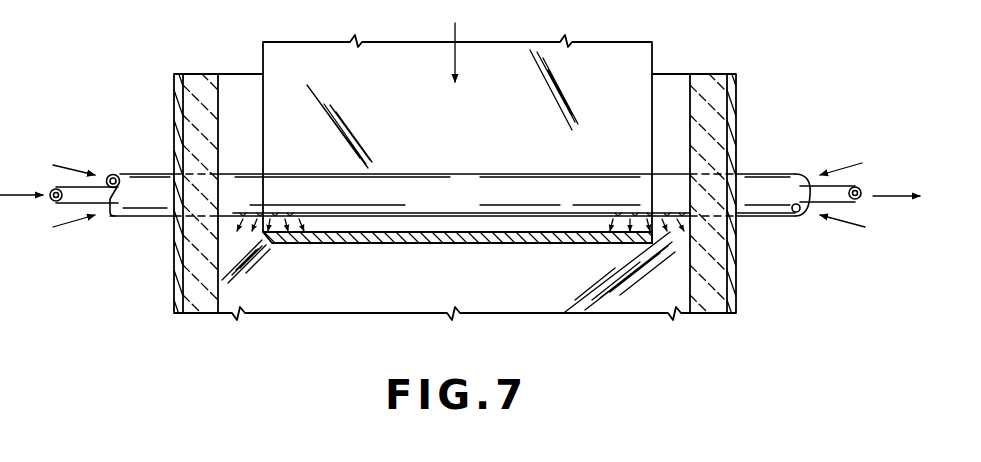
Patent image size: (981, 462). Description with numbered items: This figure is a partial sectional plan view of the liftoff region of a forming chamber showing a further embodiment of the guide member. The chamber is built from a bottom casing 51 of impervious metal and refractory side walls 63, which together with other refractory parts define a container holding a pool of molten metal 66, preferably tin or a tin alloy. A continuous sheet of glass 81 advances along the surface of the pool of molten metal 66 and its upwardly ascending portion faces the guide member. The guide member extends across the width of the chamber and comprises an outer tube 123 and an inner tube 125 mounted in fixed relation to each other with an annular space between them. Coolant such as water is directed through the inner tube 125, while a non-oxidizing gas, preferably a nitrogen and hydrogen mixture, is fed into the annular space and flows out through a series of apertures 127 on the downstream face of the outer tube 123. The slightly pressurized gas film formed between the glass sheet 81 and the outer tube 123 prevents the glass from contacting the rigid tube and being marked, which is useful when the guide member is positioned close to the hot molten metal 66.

The bottom casing 51 is at (181, 74).
The refractory side walls 63 is at (706, 76).
The continuous sheet of glass 81 is at (465, 148).
The pool of molten metal 66 is at (465, 283).
The outer tube 123 is at (772, 174).
The inner tube 125 is at (852, 205).
The apertures 127 is at (271, 213).